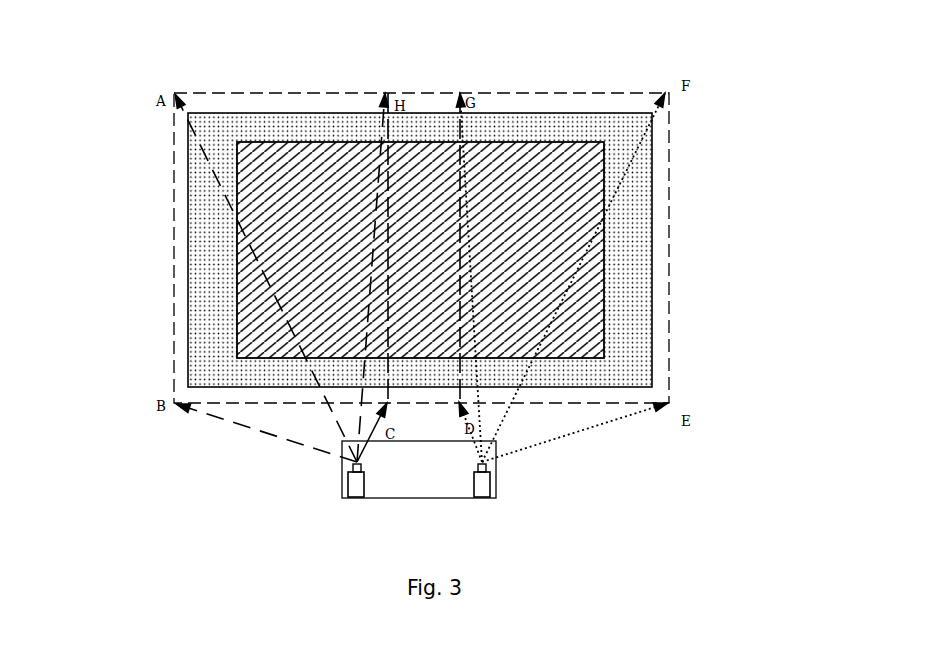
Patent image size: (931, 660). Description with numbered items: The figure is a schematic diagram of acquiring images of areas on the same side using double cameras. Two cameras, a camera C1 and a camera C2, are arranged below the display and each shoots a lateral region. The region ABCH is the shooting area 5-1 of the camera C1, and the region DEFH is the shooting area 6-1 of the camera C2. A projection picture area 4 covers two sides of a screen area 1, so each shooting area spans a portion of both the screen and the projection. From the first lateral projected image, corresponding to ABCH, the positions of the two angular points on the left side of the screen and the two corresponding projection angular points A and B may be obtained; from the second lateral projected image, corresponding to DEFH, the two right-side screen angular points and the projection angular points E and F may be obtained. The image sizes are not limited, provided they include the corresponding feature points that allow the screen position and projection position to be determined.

The screen area 1 is at (420, 203).
The projection picture area 4 is at (397, 198).
The shooting area 5-1 is at (359, 277).
The shooting area 6-1 is at (638, 277).
The camera C1 is at (345, 497).
The camera C2 is at (495, 497).